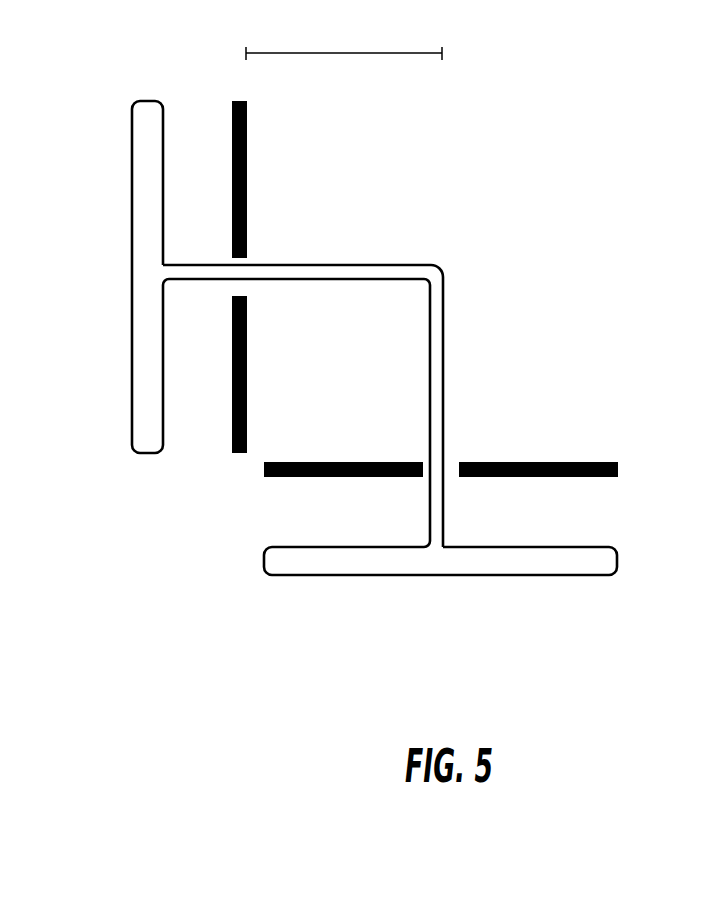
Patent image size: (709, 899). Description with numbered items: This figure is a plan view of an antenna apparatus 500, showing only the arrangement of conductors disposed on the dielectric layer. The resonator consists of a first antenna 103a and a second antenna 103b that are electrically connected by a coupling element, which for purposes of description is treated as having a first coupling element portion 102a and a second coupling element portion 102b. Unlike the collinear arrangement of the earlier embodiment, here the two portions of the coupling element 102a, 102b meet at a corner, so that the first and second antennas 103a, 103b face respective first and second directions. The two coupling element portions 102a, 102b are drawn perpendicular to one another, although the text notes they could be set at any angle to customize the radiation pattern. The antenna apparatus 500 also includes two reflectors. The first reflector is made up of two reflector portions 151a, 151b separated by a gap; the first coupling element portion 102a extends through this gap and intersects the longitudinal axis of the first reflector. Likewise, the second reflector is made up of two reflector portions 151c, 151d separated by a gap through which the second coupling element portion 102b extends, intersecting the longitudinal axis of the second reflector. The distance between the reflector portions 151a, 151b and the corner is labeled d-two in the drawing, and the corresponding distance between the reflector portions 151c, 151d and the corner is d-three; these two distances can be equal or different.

The antenna apparatus 500 is at (608, 60).
The first coupling element portion 102a is at (362, 279).
The second coupling element portion 102b is at (443, 362).
The first antenna 103a is at (165, 348).
The second antenna 103b is at (553, 573).
The first reflector portion 151a is at (247, 150).
The first reflector portion 151b is at (247, 345).
The second reflector portion 151c is at (345, 462).
The second reflector portion 151d is at (540, 461).